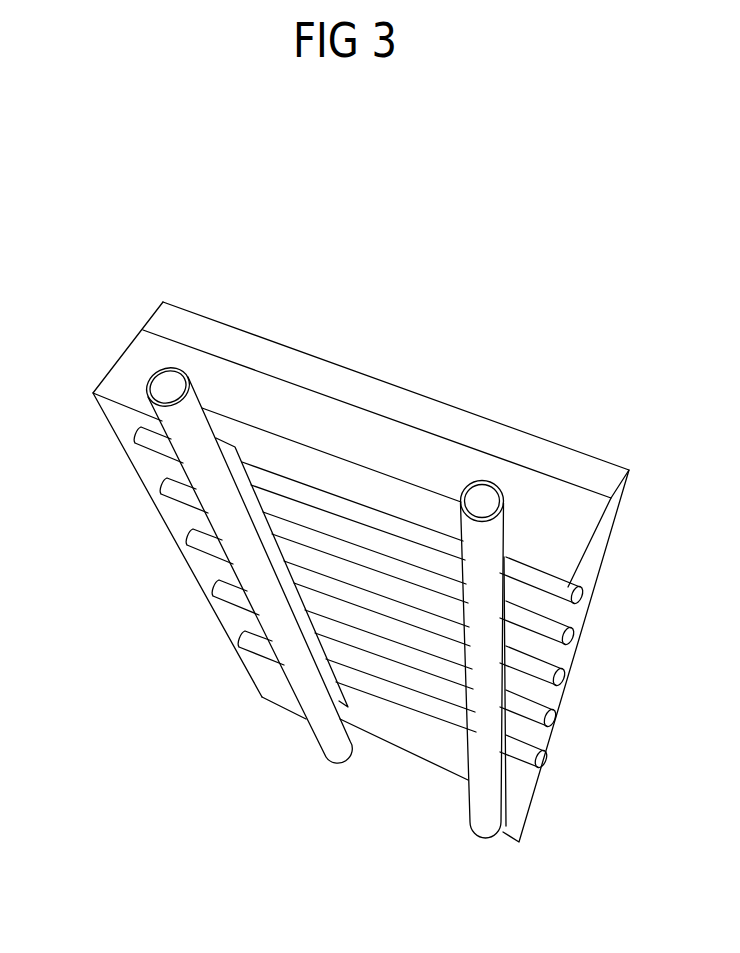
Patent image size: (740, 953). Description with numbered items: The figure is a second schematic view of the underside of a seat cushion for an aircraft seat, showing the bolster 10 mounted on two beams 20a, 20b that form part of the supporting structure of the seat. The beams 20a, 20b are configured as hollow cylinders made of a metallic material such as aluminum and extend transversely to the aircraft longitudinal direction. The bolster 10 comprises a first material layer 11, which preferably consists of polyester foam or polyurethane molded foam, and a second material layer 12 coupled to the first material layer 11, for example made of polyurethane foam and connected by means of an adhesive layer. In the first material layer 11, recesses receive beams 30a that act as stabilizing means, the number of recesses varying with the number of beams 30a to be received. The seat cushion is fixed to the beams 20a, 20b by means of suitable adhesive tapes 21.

The bolster 10 is at (161, 367).
The first material layer 11 is at (118, 360).
The second material layer 12 is at (391, 400).
The adhesive tapes 21 is at (239, 463).
The beam 20a is at (340, 755).
The beam 20b is at (486, 827).
The beams 30a is at (612, 586).